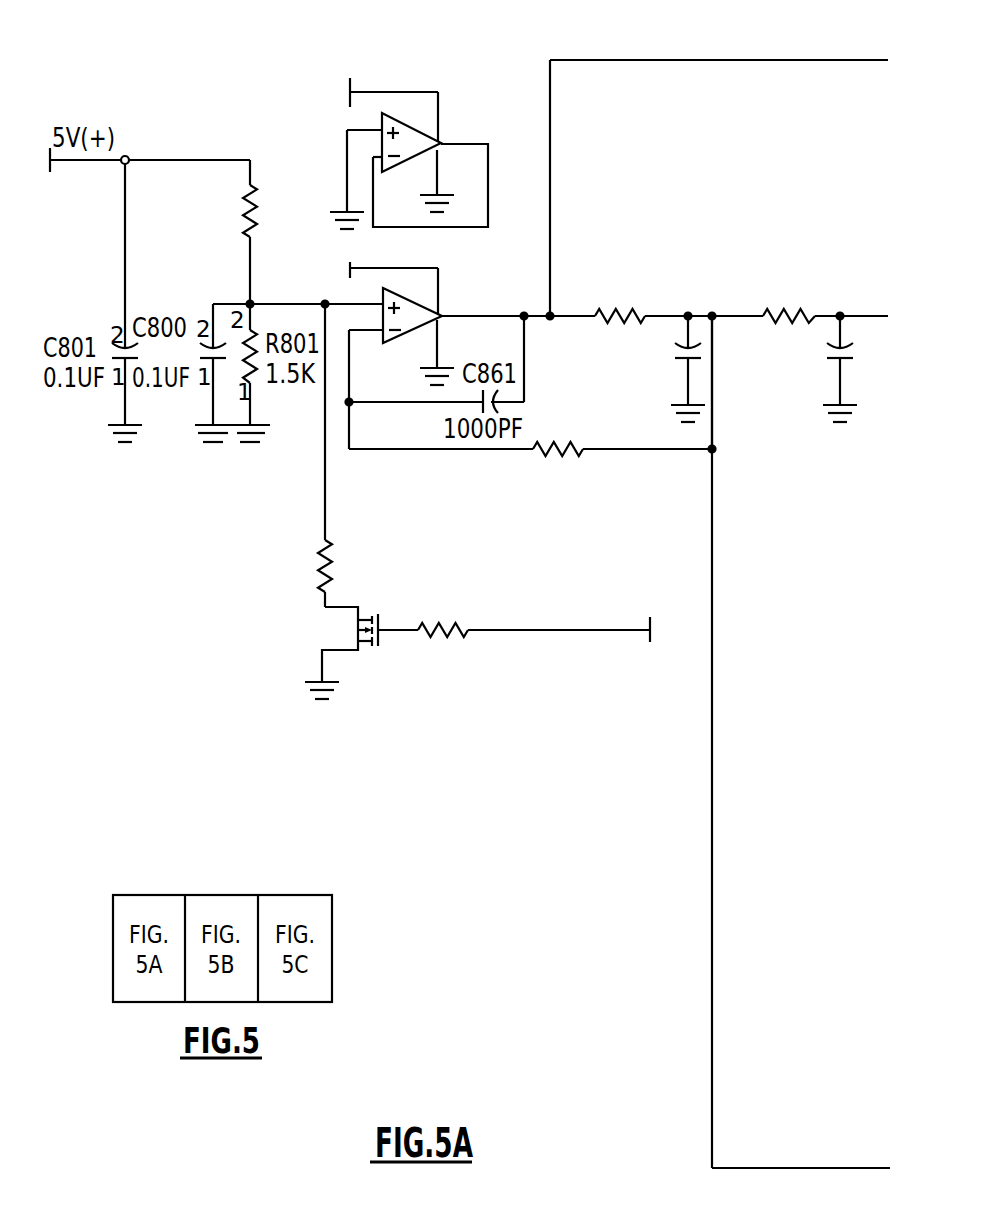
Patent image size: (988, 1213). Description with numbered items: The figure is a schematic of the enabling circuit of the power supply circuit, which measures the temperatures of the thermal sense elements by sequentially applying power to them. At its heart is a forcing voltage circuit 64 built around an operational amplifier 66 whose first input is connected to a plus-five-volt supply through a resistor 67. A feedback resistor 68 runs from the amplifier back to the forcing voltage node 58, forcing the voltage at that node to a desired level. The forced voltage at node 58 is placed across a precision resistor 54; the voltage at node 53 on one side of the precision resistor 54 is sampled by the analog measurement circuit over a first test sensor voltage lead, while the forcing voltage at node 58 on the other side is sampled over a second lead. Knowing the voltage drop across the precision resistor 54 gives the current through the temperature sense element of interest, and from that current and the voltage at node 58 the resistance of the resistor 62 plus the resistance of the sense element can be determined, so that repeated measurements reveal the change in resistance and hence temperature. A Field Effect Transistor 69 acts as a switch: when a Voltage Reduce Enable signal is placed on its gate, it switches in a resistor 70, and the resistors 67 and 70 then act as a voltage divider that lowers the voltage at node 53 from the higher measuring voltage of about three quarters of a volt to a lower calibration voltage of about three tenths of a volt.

The forcing voltage circuit 64 is at (294, 85).
The resistor 67 is at (245, 187).
The operational amplifier 66 is at (463, 298).
The voltage node 53 is at (572, 296).
The precision resistor 54 is at (658, 285).
The forcing voltage node 58 is at (714, 315).
The resistor 62 is at (828, 292).
The feedback resistor 68 is at (580, 460).
The resistor 70 is at (250, 577).
The Field Effect Transistor 69 is at (350, 675).